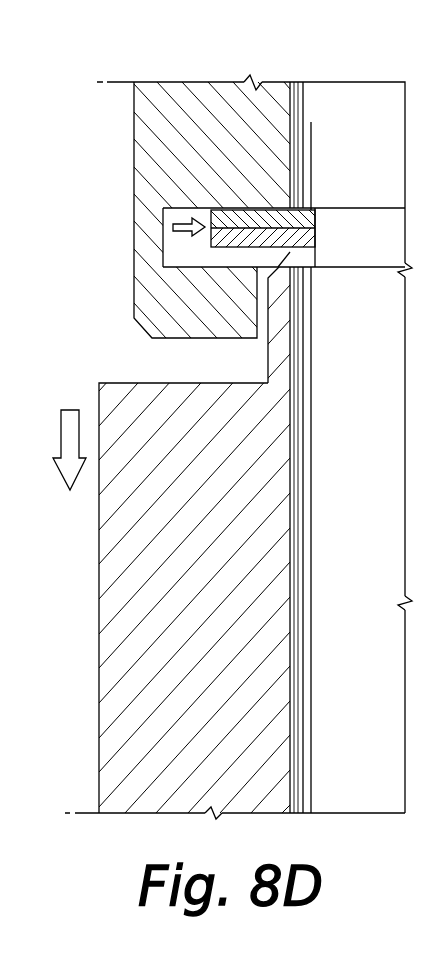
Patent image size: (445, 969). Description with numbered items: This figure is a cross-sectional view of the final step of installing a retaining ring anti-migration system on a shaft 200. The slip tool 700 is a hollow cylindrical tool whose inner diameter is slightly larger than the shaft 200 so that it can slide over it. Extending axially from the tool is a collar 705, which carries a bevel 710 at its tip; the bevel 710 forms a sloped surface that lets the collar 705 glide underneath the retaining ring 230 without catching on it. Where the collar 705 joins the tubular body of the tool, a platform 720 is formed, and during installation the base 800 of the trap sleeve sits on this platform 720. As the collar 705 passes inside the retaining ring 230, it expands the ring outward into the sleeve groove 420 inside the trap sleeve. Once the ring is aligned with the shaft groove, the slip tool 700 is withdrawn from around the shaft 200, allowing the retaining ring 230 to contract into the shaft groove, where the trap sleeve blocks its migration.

The shaft 200 is at (375, 495).
The retaining ring 230 is at (231, 212).
The sleeve groove 420 is at (163, 256).
The slip tool 700 is at (146, 700).
The collar 705 is at (282, 315).
The bevel 710 is at (285, 264).
The platform 720 is at (219, 362).
The base 800 is at (178, 360).